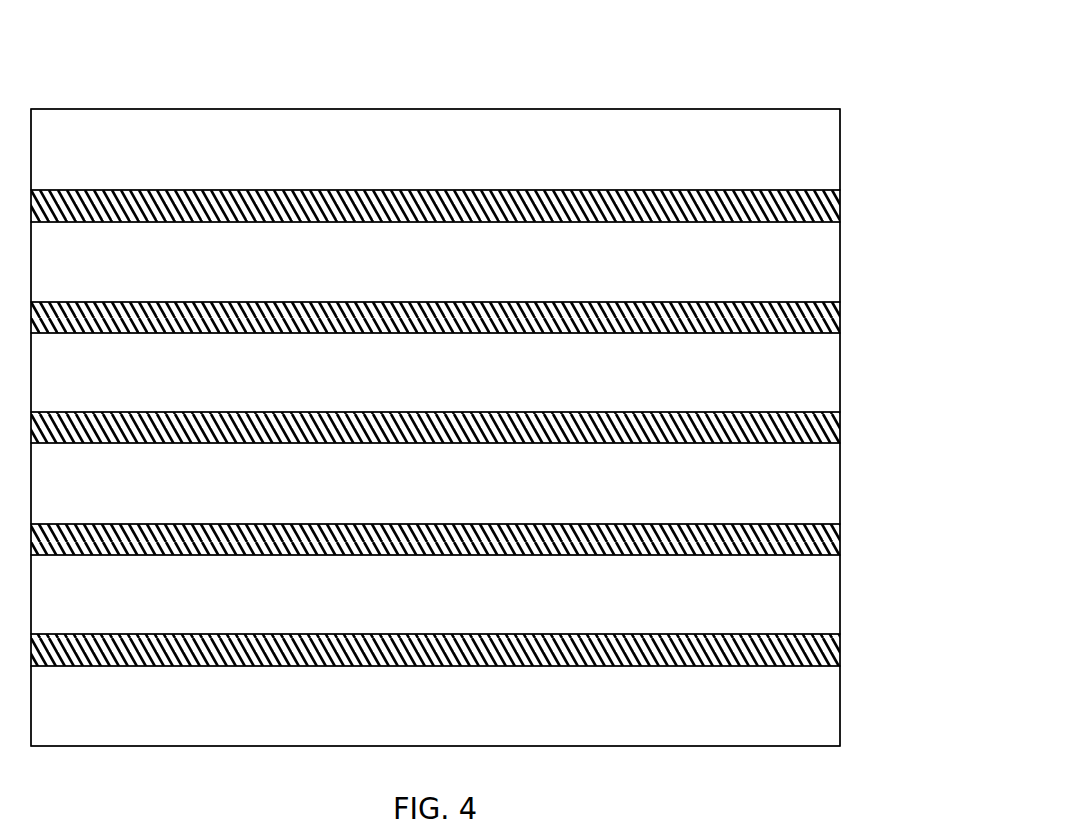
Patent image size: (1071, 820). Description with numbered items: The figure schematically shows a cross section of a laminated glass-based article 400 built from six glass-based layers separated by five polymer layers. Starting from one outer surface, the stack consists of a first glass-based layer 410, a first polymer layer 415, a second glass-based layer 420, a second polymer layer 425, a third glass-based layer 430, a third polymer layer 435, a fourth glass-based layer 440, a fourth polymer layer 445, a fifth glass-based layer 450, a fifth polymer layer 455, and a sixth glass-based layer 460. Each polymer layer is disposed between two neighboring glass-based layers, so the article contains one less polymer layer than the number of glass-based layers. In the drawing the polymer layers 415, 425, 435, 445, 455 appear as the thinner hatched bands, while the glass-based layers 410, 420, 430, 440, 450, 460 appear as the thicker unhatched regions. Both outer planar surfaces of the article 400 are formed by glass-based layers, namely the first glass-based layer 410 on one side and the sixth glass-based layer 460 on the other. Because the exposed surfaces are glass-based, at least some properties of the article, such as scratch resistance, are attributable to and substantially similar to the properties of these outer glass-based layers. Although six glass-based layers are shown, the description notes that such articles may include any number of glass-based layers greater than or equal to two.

The glass-based article 400 is at (238, 85).
The first glass-based layer 410 is at (825, 157).
The first polymer layer 415 is at (838, 199).
The second glass-based layer 420 is at (823, 258).
The second polymer layer 425 is at (838, 303).
The third glass-based layer 430 is at (823, 382).
The third polymer layer 435 is at (838, 420).
The fourth glass-based layer 440 is at (823, 488).
The fourth polymer layer 445 is at (838, 525).
The fifth glass-based layer 450 is at (823, 600).
The fifth polymer layer 455 is at (838, 641).
The sixth glass-based layer 460 is at (825, 719).